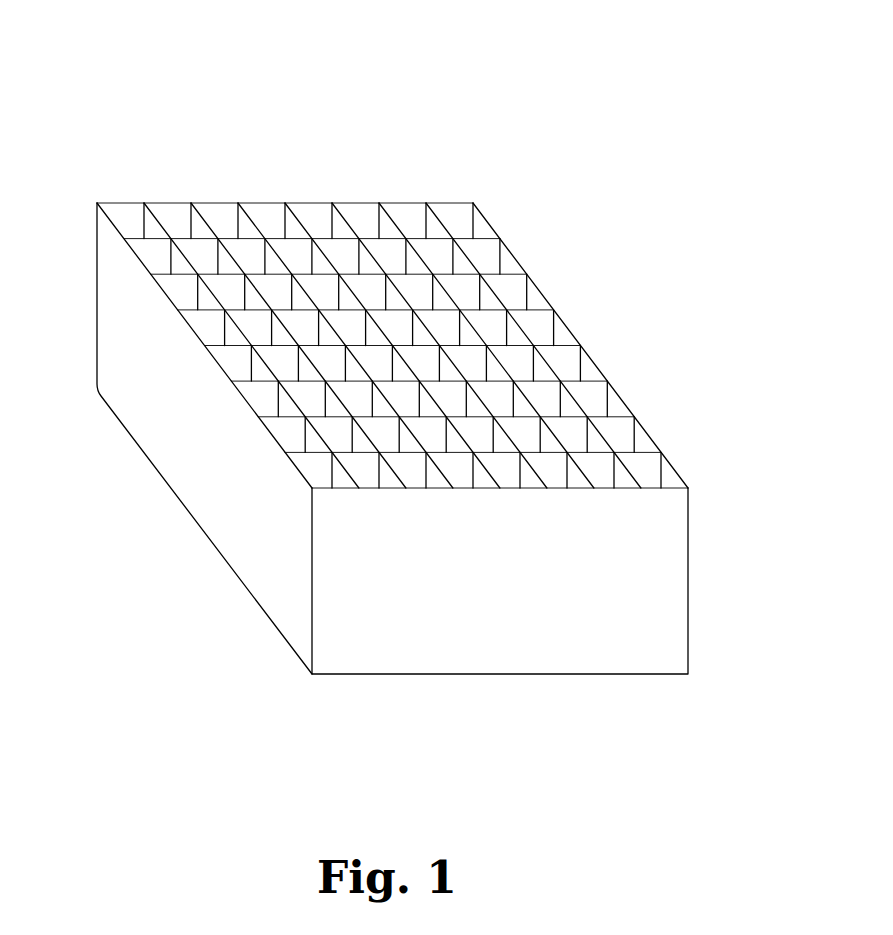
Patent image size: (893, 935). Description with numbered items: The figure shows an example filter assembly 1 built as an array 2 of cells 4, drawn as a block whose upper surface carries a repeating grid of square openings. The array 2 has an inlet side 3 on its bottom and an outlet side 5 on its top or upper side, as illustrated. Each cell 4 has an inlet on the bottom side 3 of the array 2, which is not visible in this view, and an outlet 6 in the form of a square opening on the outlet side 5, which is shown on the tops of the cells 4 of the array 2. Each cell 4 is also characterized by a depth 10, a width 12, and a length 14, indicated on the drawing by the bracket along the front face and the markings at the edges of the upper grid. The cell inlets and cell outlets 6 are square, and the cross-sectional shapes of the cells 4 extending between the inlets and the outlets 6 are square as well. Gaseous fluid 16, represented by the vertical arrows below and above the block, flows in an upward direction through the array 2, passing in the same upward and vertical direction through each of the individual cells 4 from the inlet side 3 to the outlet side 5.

The filter assembly 1 is at (113, 749).
The array 2 is at (371, 96).
The inlet side 3 is at (193, 591).
The cells 4 is at (207, 217).
The outlet side 5 is at (587, 228).
The outlet 6 is at (451, 215).
The depth 10 is at (706, 490).
The width 12 is at (531, 279).
The length 14 is at (97, 203).
The gaseous fluid 16 is at (218, 92).